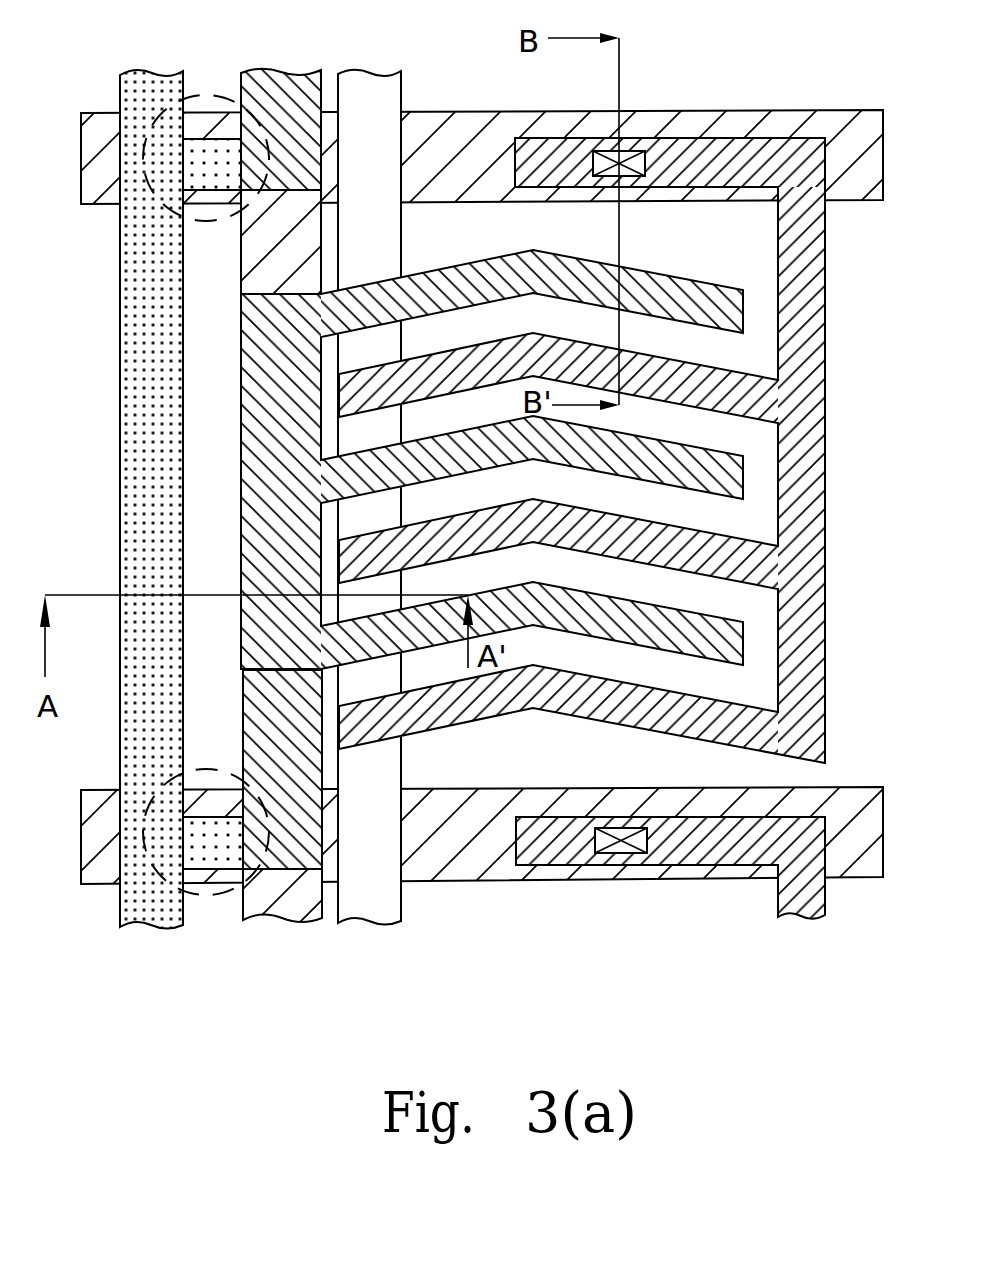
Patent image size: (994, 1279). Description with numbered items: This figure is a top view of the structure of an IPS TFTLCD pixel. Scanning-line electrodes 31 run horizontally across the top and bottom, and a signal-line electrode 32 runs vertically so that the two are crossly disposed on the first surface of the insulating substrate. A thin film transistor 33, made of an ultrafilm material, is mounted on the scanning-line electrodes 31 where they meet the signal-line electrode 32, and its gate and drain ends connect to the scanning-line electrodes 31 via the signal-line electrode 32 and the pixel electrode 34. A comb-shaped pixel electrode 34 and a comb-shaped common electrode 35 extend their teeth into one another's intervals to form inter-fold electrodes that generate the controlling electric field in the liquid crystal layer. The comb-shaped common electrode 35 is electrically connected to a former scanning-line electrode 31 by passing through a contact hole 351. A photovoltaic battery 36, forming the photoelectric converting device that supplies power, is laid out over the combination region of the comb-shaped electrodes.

The scanning-line electrode 31 is at (448, 133).
The signal-line electrode 32 is at (143, 412).
The thin film transistor 33 is at (204, 93).
The comb-shaped pixel electrode 34 is at (273, 412).
The comb-shaped common electrode 35 is at (682, 382).
The contact hole 351 is at (640, 148).
The photovoltaic battery 36 is at (360, 88).